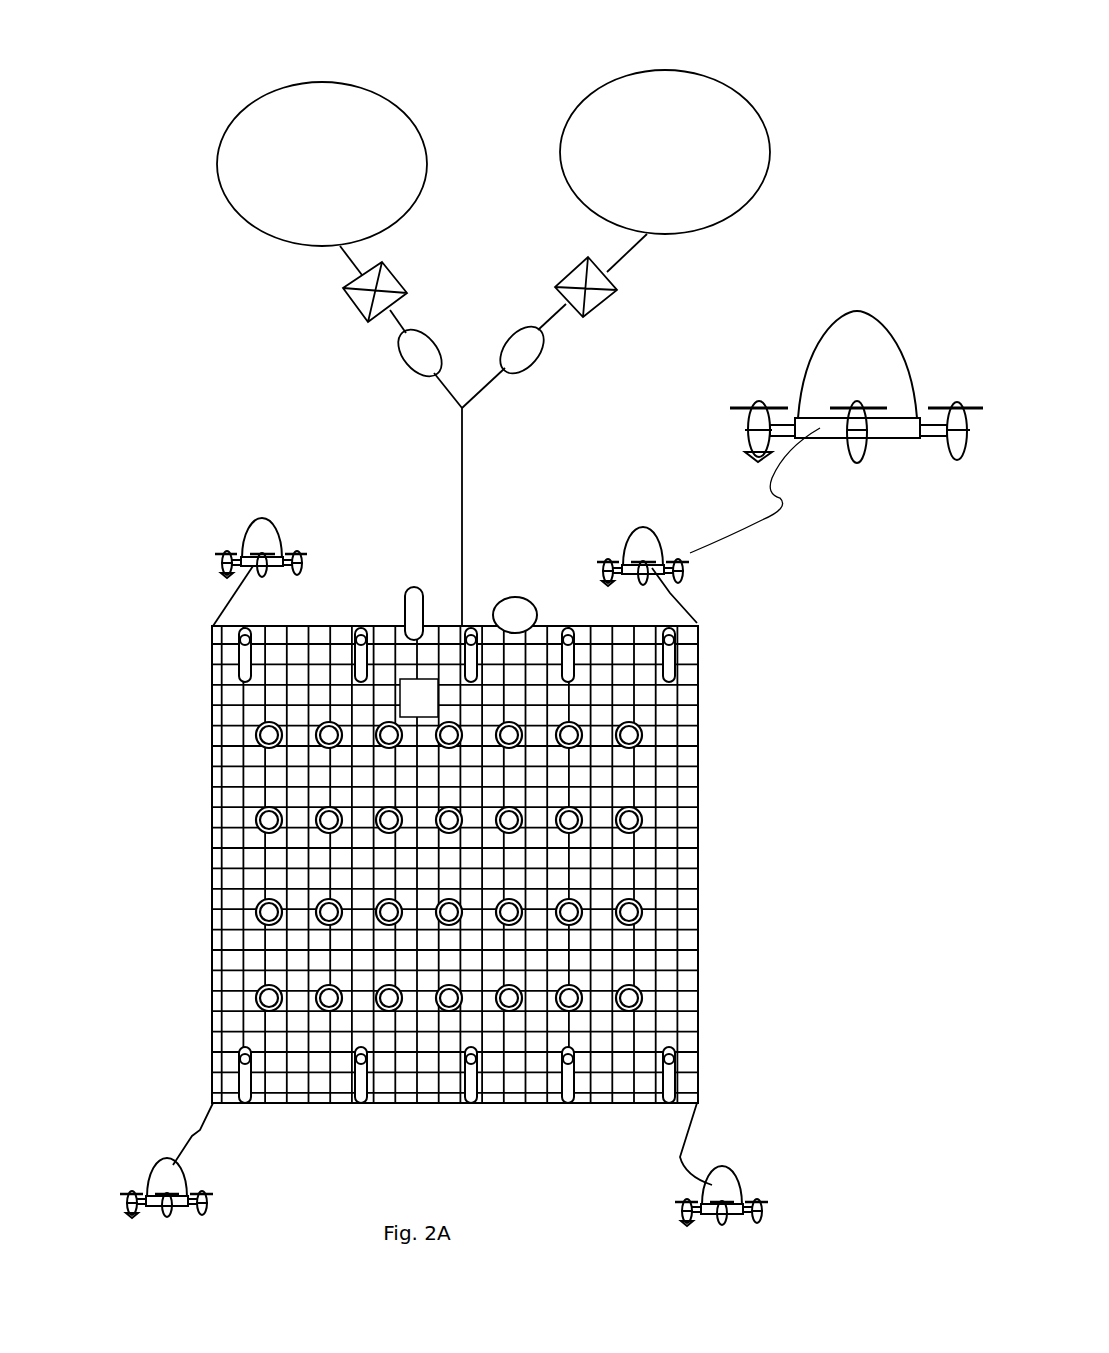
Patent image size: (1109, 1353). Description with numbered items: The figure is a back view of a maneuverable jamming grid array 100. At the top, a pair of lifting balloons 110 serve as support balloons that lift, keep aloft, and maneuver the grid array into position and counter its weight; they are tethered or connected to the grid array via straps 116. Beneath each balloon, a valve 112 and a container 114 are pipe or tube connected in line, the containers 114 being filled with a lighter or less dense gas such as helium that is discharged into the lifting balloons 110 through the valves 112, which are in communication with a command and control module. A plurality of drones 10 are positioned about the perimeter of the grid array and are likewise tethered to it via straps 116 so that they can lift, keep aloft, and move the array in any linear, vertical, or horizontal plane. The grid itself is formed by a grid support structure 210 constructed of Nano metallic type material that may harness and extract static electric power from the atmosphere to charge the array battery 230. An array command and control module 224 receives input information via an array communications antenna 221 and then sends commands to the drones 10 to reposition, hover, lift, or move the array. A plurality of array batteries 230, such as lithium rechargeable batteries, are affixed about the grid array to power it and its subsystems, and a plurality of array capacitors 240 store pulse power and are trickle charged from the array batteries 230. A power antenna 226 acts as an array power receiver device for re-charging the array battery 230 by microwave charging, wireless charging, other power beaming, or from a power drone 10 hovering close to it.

The maneuverable jamming grid array 100 is at (165, 112).
The lifting balloons 110 is at (275, 95).
The valves 112 is at (358, 298).
The containers 114 is at (410, 351).
The straps 116 is at (462, 478).
The drone 10 is at (233, 515).
The grid support structure 210 is at (213, 690).
The array communications antenna 221 is at (412, 588).
The array command and control module 224 is at (413, 688).
The power antenna 226 is at (510, 607).
The array battery 230 is at (180, 636).
The array capacitor 240 is at (268, 997).